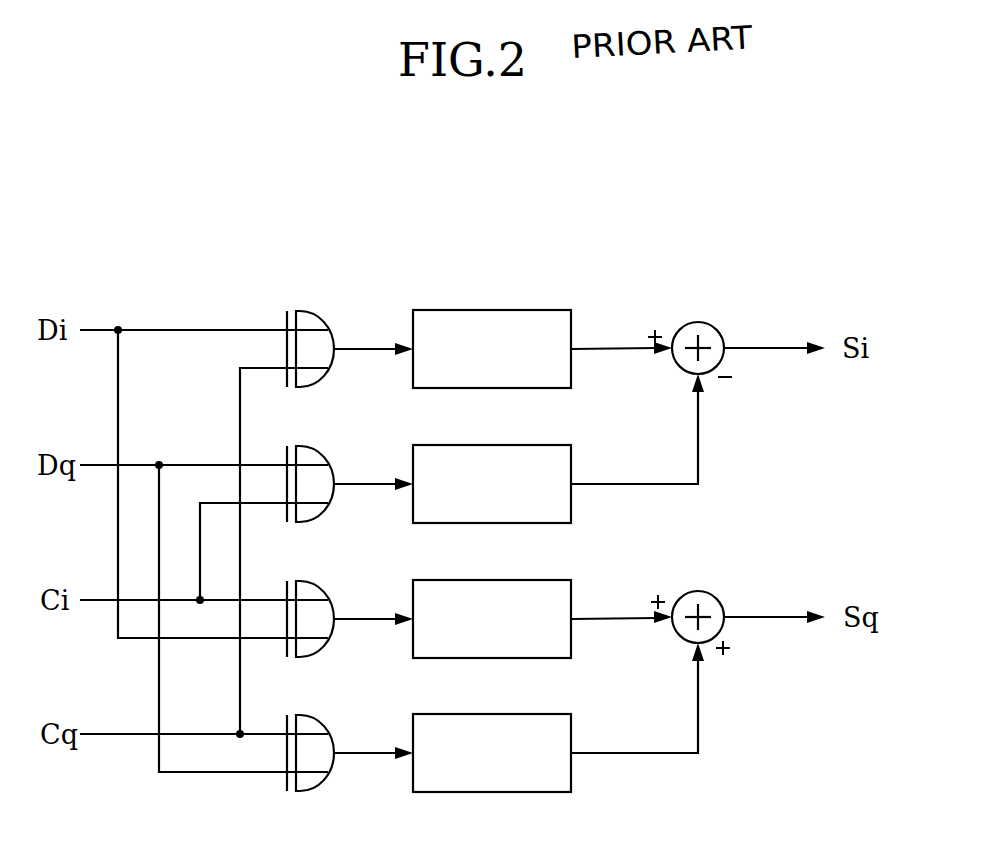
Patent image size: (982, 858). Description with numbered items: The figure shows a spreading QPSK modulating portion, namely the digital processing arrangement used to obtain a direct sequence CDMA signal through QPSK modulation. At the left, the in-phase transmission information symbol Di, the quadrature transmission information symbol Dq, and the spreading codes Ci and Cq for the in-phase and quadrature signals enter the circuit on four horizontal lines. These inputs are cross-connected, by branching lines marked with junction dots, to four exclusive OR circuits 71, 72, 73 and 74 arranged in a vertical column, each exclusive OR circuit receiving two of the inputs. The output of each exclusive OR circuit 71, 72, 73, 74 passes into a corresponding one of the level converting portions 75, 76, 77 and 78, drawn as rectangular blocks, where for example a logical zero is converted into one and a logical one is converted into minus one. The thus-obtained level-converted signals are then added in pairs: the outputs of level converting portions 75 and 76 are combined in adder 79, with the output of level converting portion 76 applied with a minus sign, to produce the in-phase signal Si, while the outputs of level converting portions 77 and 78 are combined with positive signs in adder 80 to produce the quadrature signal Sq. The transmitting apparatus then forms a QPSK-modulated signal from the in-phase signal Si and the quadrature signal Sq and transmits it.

The exclusive OR circuit 71 is at (305, 335).
The exclusive OR circuit 72 is at (305, 470).
The exclusive OR circuit 73 is at (305, 605).
The exclusive OR circuit 74 is at (305, 739).
The level converting portion 75 is at (492, 336).
The level converting portion 76 is at (492, 471).
The level converting portion 77 is at (492, 606).
The level converting portion 78 is at (492, 740).
The adder 79 is at (698, 334).
The adder 80 is at (698, 604).